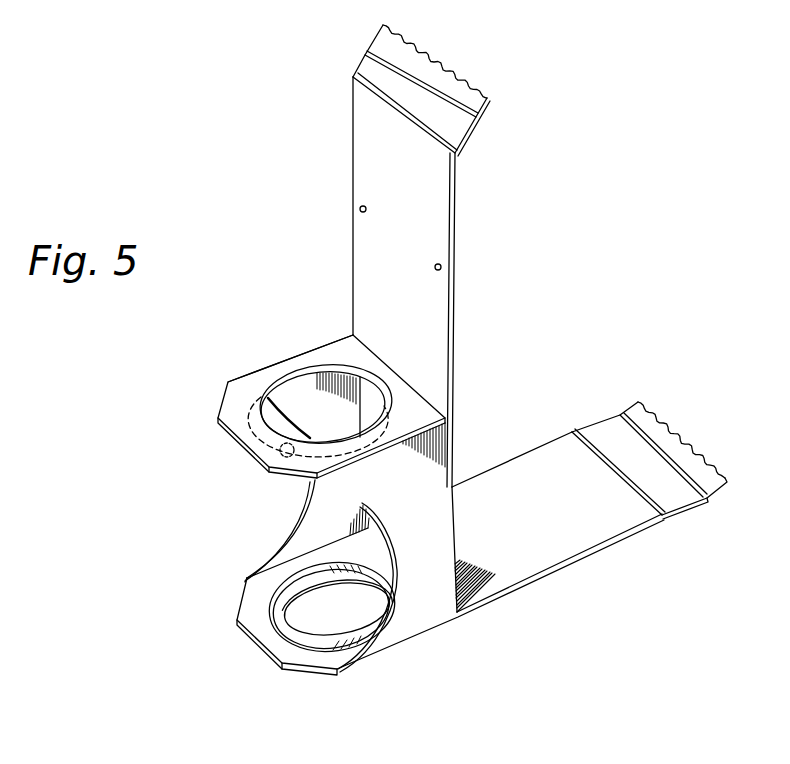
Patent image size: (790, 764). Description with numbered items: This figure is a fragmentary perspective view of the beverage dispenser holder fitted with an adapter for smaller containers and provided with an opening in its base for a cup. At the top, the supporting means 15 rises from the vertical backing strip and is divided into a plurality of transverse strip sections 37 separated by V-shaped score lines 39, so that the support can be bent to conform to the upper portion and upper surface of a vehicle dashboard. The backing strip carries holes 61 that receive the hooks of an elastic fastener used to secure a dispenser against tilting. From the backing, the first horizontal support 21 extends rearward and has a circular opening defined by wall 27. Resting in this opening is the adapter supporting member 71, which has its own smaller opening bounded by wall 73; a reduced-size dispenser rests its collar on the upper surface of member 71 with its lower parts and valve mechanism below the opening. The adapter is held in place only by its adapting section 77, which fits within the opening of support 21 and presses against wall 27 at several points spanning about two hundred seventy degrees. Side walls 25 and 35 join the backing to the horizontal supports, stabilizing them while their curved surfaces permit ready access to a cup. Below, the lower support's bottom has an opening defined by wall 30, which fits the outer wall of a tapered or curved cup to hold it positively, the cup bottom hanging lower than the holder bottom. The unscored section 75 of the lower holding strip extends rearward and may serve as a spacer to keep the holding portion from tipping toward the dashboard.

The supporting means 15 is at (473, 132).
The score lines 39 is at (382, 43).
The transverse strip sections 37 is at (366, 63).
The holes 61 is at (368, 208).
The first horizontal support 21 is at (236, 447).
The adapter supporting member 71 is at (326, 346).
The wall of adapter opening 73 is at (290, 378).
The adapting section 77 is at (245, 420).
The wall of circular opening 27 is at (283, 462).
The side wall 25 is at (313, 517).
The wall of bottom opening 30 is at (303, 602).
The side wall 35 is at (437, 515).
The section of holder strip 75 is at (527, 565).